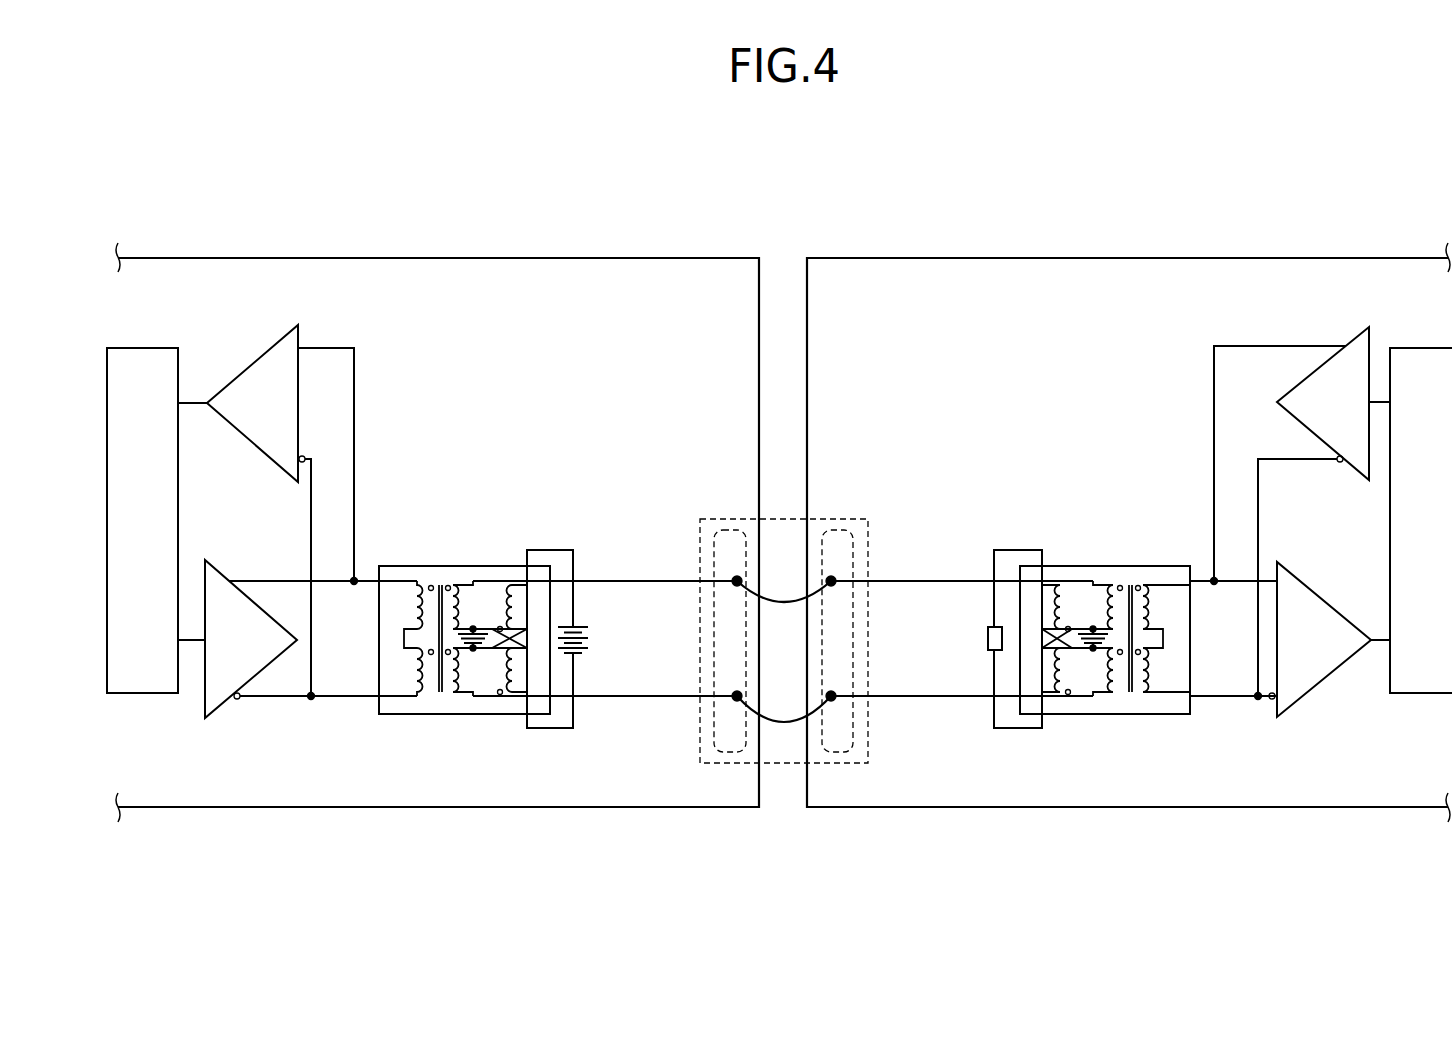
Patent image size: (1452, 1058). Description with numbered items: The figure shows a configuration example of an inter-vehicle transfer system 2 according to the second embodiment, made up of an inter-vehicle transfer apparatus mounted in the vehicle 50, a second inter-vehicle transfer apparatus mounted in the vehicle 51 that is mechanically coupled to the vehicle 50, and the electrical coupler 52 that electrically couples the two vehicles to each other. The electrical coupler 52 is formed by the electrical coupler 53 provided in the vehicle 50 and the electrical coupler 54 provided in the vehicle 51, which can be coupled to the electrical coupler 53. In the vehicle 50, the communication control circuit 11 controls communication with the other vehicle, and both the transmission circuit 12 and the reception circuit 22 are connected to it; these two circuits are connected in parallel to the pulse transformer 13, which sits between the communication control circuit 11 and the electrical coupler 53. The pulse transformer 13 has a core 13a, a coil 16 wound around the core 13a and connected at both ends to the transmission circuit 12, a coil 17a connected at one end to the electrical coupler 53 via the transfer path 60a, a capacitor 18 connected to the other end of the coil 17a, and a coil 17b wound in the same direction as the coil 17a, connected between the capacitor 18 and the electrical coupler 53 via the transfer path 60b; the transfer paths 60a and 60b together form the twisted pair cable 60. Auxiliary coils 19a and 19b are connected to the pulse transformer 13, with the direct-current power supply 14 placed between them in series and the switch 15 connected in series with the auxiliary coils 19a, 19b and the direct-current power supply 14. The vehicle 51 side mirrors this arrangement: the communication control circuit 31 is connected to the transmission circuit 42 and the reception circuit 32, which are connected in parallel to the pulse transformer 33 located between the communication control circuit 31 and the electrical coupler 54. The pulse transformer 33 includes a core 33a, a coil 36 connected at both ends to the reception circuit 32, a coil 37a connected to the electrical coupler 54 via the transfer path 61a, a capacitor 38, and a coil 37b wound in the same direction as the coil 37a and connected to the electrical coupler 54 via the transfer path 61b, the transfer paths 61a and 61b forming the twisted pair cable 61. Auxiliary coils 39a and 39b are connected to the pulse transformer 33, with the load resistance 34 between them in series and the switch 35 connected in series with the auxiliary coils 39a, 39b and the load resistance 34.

The inter-vehicle transfer system 2 is at (806, 193).
The communication control circuit 11 is at (122, 349).
The transmission circuit 12 is at (227, 575).
The pulse transformer 13 is at (397, 566).
The core 13a is at (430, 690).
The direct-current power supply 14 is at (578, 620).
The switch 15 is at (540, 548).
The coil 16 is at (420, 598).
The coil 17a is at (462, 598).
The coil 17b is at (467, 684).
The capacitor 18 is at (483, 628).
The auxiliary coil 19a is at (507, 600).
The auxiliary coil 19b is at (508, 664).
The reception circuit 22 is at (276, 338).
The communication control circuit 31 is at (1405, 349).
The reception circuit 32 is at (1293, 568).
The pulse transformer 33 is at (1172, 566).
The core 33a is at (1135, 690).
The load resistance 34 is at (988, 640).
The switch 35 is at (1008, 550).
The coil 36 is at (1150, 598).
The coil 37a is at (1108, 598).
The coil 37b is at (1110, 690).
The capacitor 38 is at (1088, 628).
The auxiliary coil 39a is at (1055, 598).
The auxiliary coil 39b is at (1055, 665).
The transmission circuit 42 is at (1349, 332).
The vehicle 50 is at (267, 257).
The vehicle 51 is at (1236, 257).
The electrical coupler 52 is at (780, 518).
The electrical coupler 53 is at (727, 753).
The electrical coupler 54 is at (836, 753).
The twisted pair cable 60 is at (700, 520).
The transfer path 60a is at (620, 580).
The transfer path 60b is at (675, 696).
The twisted pair cable 61 is at (870, 520).
The transfer path 61a is at (940, 580).
The transfer path 61b is at (892, 696).